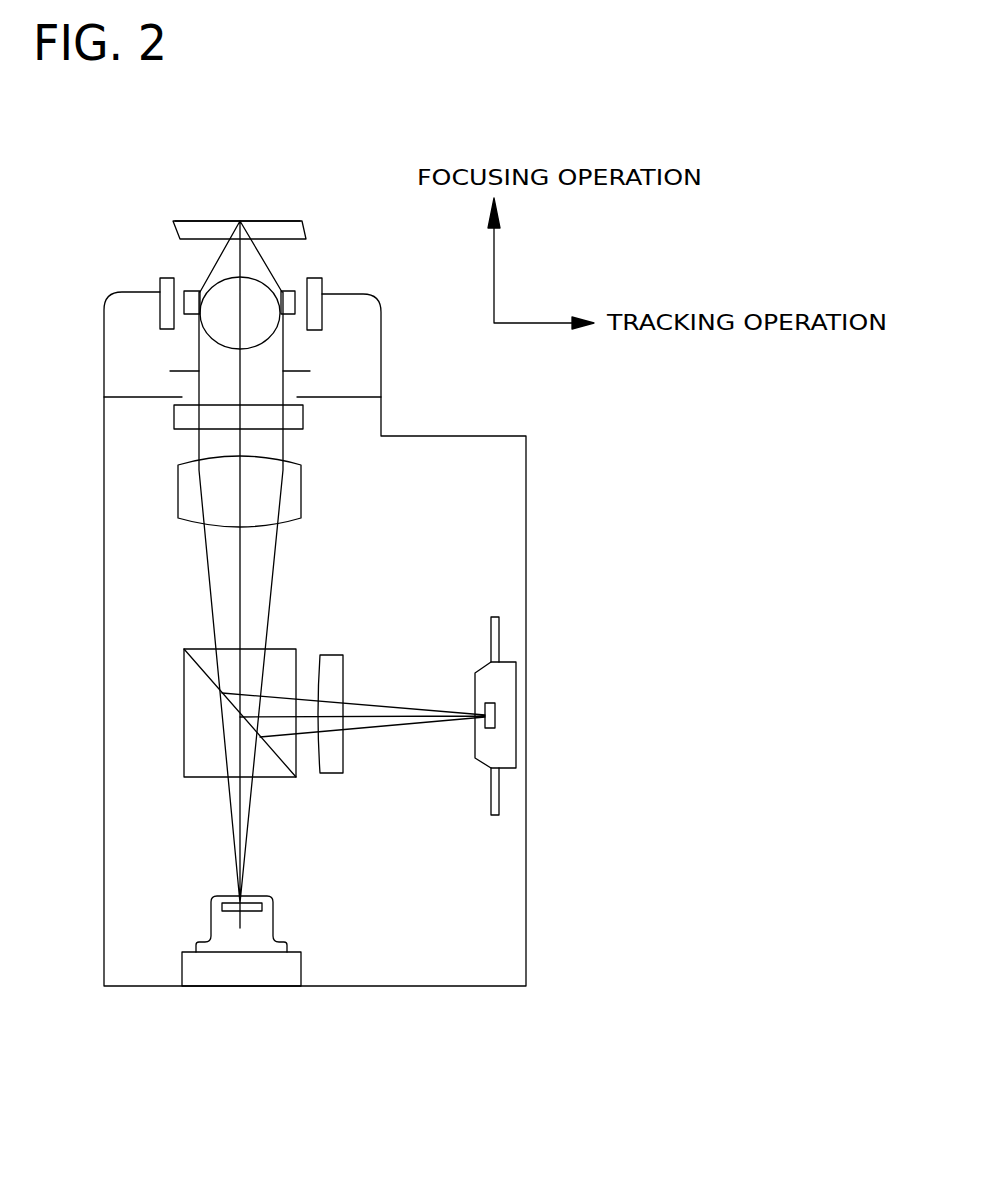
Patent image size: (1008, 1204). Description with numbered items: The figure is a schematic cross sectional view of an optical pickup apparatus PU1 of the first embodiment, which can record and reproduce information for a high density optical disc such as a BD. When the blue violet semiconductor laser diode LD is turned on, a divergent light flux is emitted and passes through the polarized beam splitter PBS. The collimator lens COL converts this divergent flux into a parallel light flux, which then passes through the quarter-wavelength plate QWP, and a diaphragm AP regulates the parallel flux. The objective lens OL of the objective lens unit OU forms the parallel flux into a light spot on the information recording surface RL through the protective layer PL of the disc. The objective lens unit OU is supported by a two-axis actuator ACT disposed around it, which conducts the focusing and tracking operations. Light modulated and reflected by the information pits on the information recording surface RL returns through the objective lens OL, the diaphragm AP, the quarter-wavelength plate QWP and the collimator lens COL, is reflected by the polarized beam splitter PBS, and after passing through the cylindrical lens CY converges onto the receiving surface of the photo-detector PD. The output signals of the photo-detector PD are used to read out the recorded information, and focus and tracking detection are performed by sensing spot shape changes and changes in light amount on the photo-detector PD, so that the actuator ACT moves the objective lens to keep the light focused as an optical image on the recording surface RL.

The optical pickup apparatus PU1 is at (544, 614).
The protective layer PL is at (180, 229).
The information recording surface RL is at (290, 221).
The objective lens unit OU is at (278, 297).
The two-axis actuator ACT is at (322, 309).
The objective lens OL is at (289, 290).
The diaphragm AP is at (290, 370).
The λ/4 wavelength plate QWP is at (304, 413).
The collimator lens COL is at (190, 520).
The polarized beam splitter PBS is at (183, 719).
The cylindrical lens CY is at (328, 655).
The photo-detector PD is at (516, 700).
The blue violet semiconductor laser diode LD is at (259, 942).